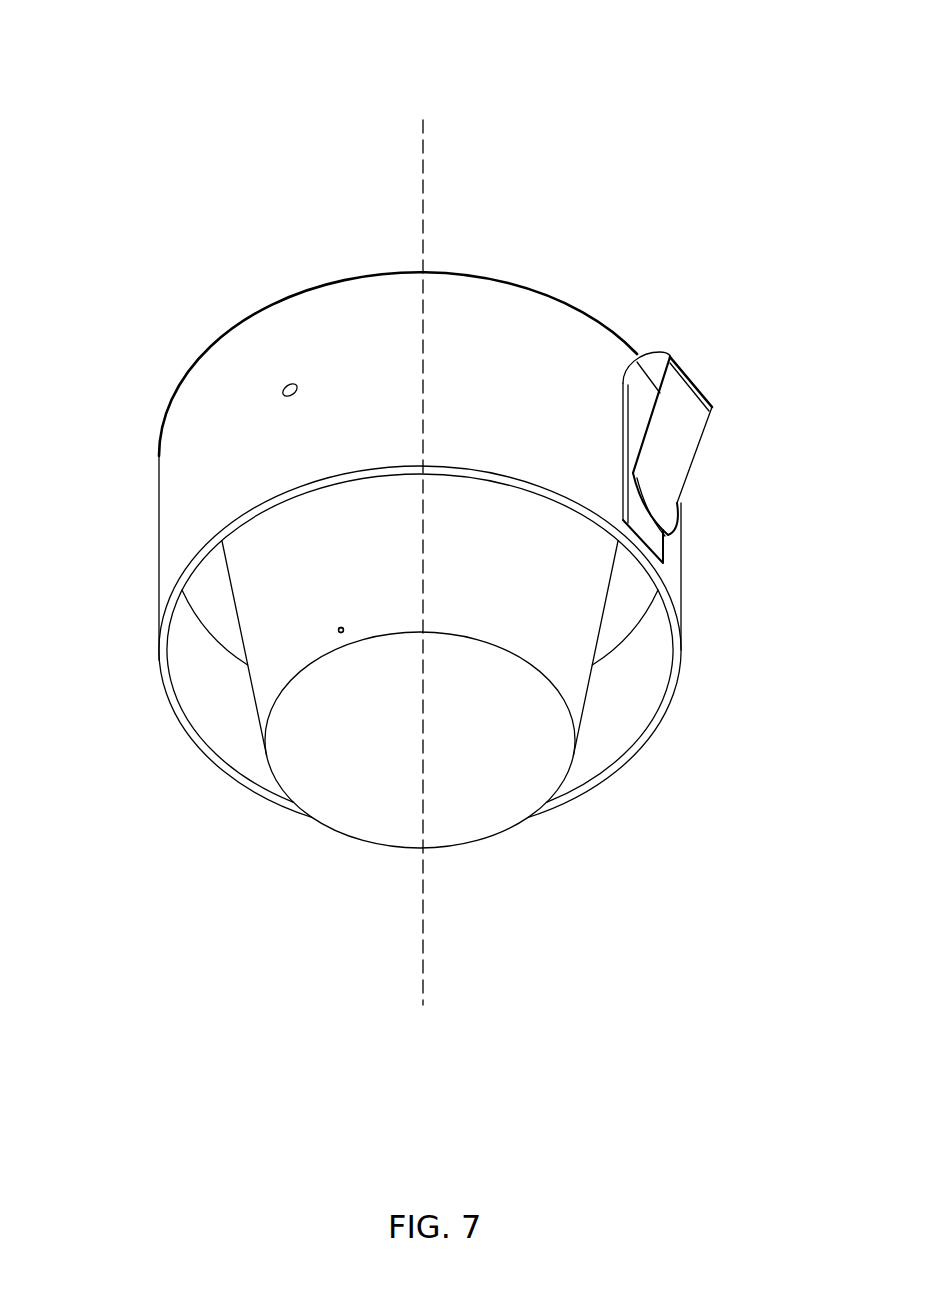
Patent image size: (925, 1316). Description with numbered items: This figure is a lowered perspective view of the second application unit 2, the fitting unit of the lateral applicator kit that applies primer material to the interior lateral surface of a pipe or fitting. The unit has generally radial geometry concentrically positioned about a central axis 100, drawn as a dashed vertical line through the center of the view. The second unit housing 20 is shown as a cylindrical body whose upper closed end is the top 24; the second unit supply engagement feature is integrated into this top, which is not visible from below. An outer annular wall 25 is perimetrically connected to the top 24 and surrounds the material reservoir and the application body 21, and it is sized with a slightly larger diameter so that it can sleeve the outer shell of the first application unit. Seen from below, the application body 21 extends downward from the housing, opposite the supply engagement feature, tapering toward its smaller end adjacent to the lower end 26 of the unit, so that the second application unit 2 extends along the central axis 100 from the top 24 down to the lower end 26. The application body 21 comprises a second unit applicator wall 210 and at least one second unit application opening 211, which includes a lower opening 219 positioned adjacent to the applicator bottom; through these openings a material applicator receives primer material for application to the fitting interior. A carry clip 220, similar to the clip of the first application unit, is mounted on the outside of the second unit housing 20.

The second application unit 2 is at (184, 88).
The second unit housing 20 is at (271, 325).
The application body 21 is at (243, 731).
The top 24 is at (359, 250).
The outer annular wall 25 is at (200, 742).
The lower end 26 is at (473, 864).
The central axis 100 is at (423, 146).
The second unit applicator wall 210 is at (525, 592).
The second unit application opening 211 is at (342, 628).
The lower opening 219 is at (380, 595).
The carry clip 220 is at (695, 427).